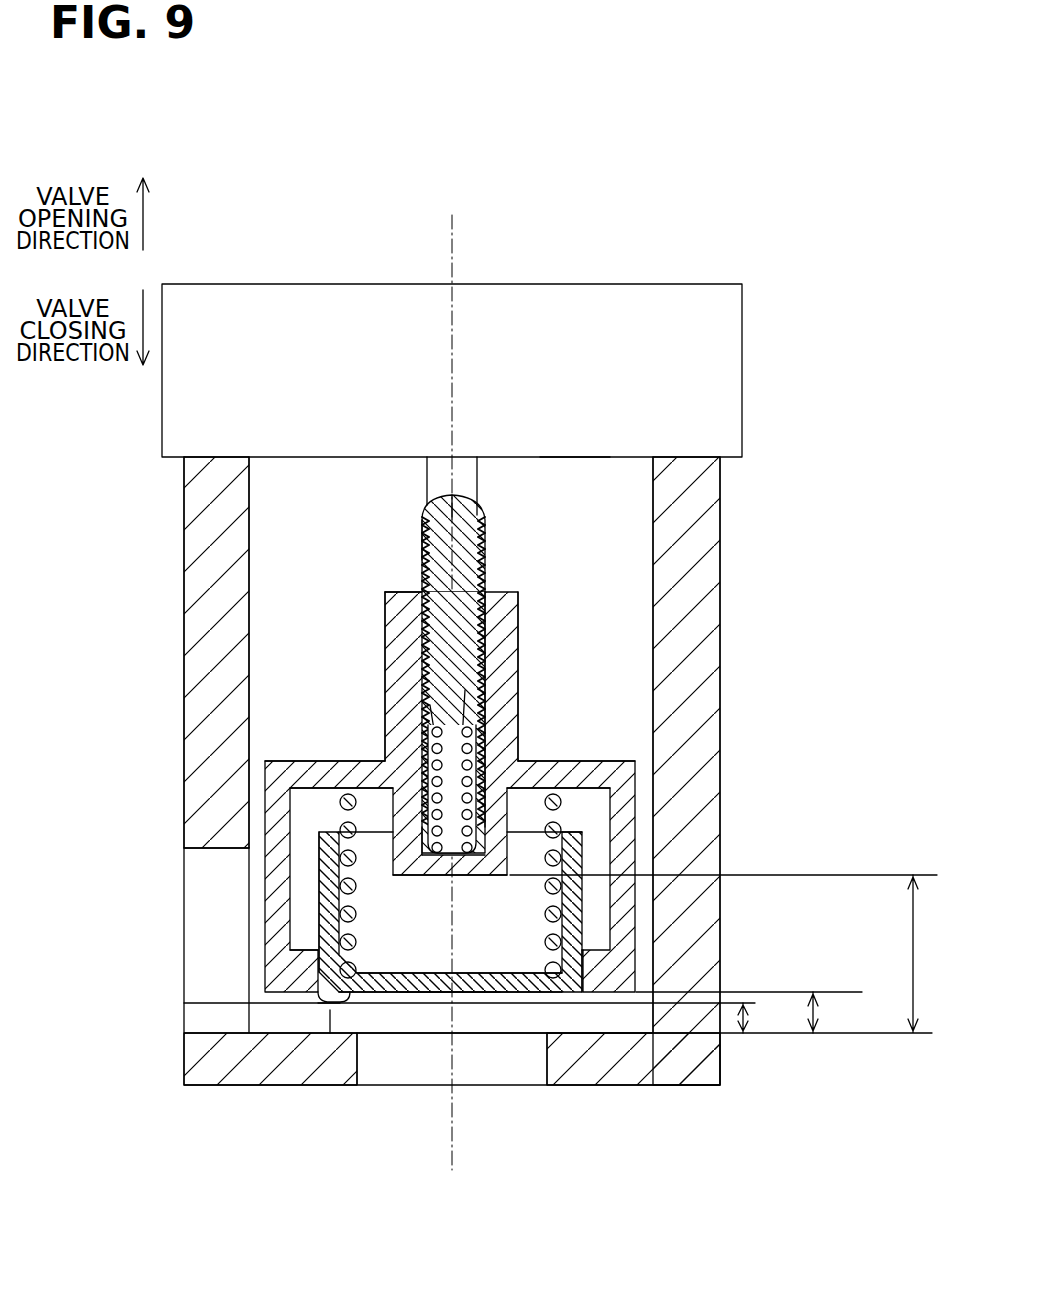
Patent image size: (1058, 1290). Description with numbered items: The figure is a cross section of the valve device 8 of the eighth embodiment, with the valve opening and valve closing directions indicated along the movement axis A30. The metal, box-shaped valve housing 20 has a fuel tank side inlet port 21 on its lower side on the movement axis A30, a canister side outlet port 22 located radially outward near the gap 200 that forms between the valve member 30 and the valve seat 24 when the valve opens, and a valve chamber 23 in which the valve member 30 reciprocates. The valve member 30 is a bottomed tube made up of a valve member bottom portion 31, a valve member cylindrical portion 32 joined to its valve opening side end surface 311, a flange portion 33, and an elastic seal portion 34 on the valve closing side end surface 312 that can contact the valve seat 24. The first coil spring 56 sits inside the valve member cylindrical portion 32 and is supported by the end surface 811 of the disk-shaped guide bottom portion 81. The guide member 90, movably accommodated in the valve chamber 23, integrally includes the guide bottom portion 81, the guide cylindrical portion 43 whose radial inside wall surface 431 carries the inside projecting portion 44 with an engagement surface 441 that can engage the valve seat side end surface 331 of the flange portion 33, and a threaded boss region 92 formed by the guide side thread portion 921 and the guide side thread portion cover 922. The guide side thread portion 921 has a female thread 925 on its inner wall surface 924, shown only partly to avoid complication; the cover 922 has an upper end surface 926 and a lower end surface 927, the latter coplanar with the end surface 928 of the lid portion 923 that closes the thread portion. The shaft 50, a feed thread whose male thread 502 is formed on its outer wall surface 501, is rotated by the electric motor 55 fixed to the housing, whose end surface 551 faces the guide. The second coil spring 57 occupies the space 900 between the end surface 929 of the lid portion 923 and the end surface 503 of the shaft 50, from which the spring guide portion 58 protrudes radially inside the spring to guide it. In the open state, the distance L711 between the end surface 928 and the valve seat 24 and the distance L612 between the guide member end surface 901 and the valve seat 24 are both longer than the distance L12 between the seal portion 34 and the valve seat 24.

The valve device 8 is at (747, 257).
The valve housing 20 is at (170, 563).
The fuel tank side inlet port 21 is at (470, 1065).
The canister side outlet port 22 is at (218, 914).
The valve chamber 23 is at (250, 632).
The valve seat 24 is at (570, 1036).
The valve member 30 is at (308, 841).
The valve member bottom portion 31 is at (495, 995).
The valve member cylindrical portion 32 is at (330, 862).
The flange portion 33 is at (320, 952).
The seal portion 34 is at (330, 1004).
The guide cylindrical portion 43 is at (292, 800).
The inside projecting portion 44 is at (585, 960).
The shaft 50 is at (445, 487).
The electric motor 55 is at (722, 402).
The first coil spring 56 is at (590, 900).
The second coil spring 57 is at (470, 812).
The spring guide portion 58 is at (430, 715).
The guide bottom portion 81 is at (545, 770).
The guide member 90 is at (254, 795).
The threaded boss 92 is at (388, 680).
The gap 200 is at (330, 1022).
The valve opening side end surface 311 is at (527, 972).
The valve closing side end surface 312 is at (545, 998).
The valve seat side end surface 331 is at (320, 998).
The radial inside wall surface 431 is at (387, 748).
The engagement surface 441 is at (600, 930).
The outer wall surface 501 is at (420, 530).
The male thread 502 is at (420, 542).
The end surface 503 is at (415, 702).
The end surface 551 is at (602, 460).
The end surface 811 is at (583, 790).
The space 900 is at (470, 837).
The end surface 901 is at (605, 985).
The guide side thread portion 921 is at (372, 808).
The guide side thread portion cover 922 is at (410, 638).
The lid portion 923 is at (460, 866).
The inner wall surface 924 is at (462, 600).
The female thread 925 is at (478, 600).
The end surface 926 is at (405, 572).
The end surface 927 is at (418, 900).
The end surface 928 is at (445, 880).
The end surface 929 is at (515, 692).
The movement axis A30 is at (458, 247).
The distance L711 is at (913, 952).
The distance L612 is at (815, 1012).
The distance L12 is at (746, 1020).